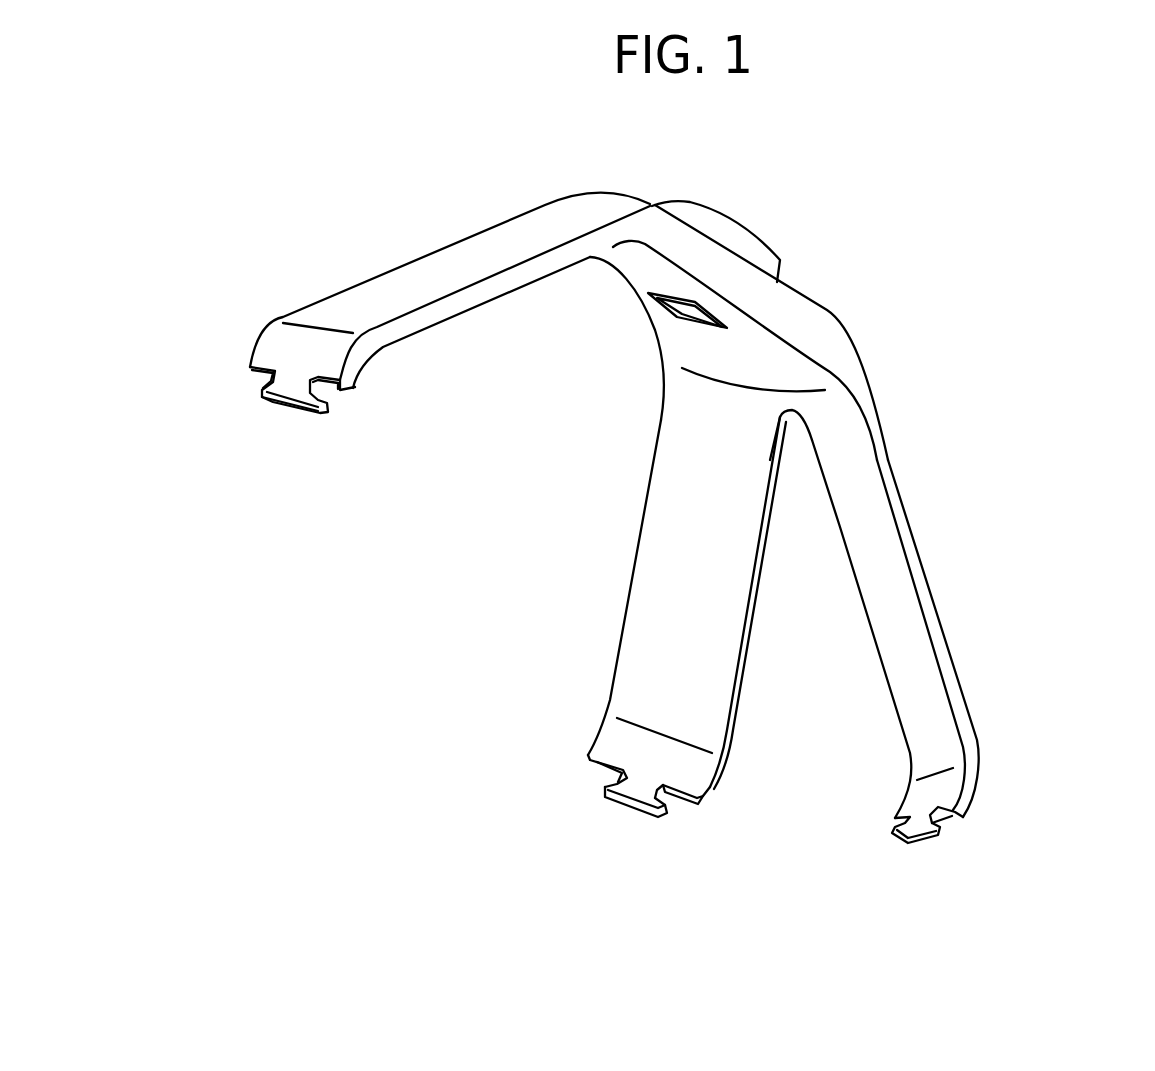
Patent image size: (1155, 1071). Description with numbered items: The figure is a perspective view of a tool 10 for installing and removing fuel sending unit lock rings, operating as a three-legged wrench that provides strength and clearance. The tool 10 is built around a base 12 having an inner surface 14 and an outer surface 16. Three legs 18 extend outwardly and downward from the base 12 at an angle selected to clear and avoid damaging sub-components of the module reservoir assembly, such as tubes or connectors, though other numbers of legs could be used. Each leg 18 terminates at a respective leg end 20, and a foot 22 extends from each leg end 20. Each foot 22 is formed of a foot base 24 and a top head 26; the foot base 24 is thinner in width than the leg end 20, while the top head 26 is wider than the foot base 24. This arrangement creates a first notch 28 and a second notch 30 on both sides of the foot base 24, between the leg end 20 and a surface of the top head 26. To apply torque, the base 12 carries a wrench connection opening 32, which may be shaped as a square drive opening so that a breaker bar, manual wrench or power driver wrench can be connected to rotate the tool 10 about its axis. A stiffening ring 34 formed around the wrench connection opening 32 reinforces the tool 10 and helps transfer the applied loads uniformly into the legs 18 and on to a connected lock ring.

The tool 10 is at (1010, 580).
The base 12 is at (657, 223).
The inner surface 14 is at (763, 350).
The outer surface 16 is at (827, 308).
The legs 18 is at (413, 270).
The leg ends 20 is at (690, 803).
The foot 22 is at (295, 390).
The foot base 24 is at (615, 778).
The top head 26 is at (642, 805).
The first notch 28 is at (263, 383).
The second notch 30 is at (337, 397).
The wrench connection opening 32 is at (688, 310).
The stiffening ring 34 is at (760, 240).